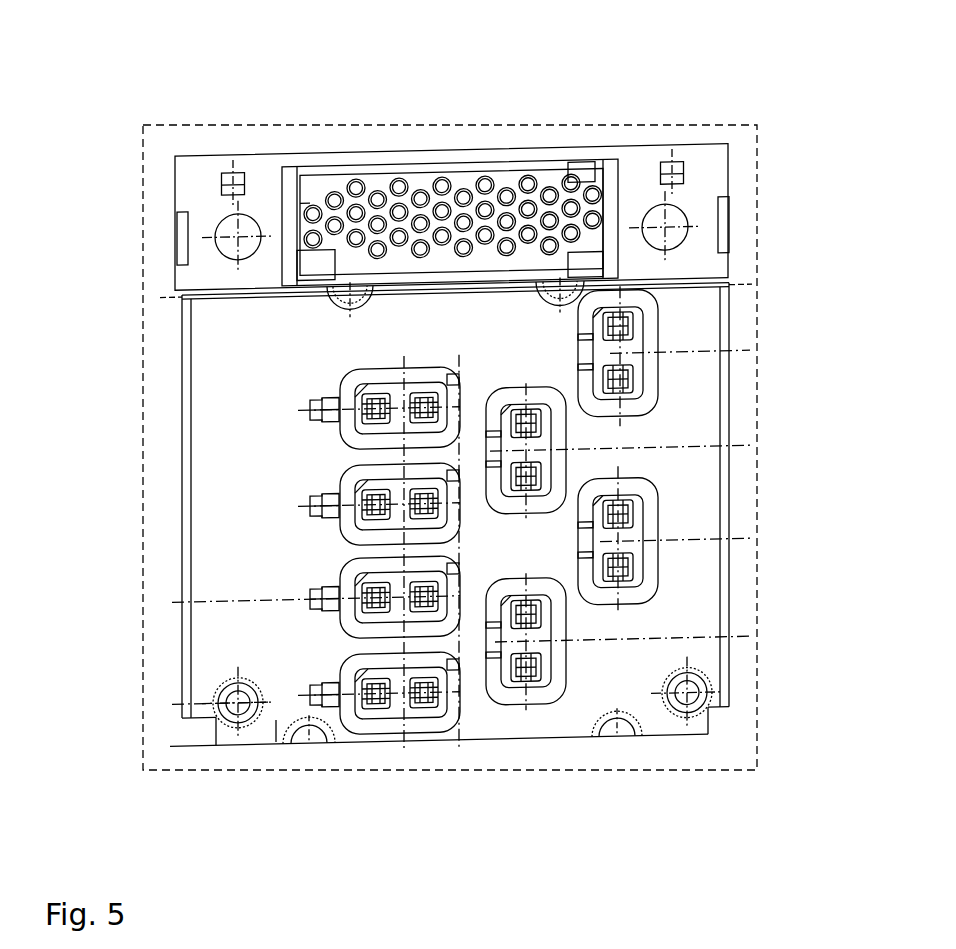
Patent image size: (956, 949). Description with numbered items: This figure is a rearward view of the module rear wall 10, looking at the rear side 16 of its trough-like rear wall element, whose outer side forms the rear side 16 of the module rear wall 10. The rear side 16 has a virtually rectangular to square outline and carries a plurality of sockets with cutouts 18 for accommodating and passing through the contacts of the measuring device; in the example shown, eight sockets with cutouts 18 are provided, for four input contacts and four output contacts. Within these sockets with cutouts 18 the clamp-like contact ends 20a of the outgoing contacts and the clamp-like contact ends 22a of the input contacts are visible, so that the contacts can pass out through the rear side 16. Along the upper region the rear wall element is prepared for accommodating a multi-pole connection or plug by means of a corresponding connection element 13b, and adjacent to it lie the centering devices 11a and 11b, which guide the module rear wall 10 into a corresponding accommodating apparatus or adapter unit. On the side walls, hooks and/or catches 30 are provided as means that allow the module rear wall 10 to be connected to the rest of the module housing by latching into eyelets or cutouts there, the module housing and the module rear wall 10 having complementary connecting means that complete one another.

The module rear wall 10 is at (310, 772).
The centering device 11a is at (403, 170).
The centering device 11b is at (367, 167).
The connection element 13b is at (355, 168).
The rear side 16 is at (237, 373).
The sockets with cutouts 18 is at (347, 483).
The clamp-like contact ends 20a is at (420, 415).
The clamp-like contact ends 22a is at (622, 388).
The hooks and/or catches 30 is at (233, 178).